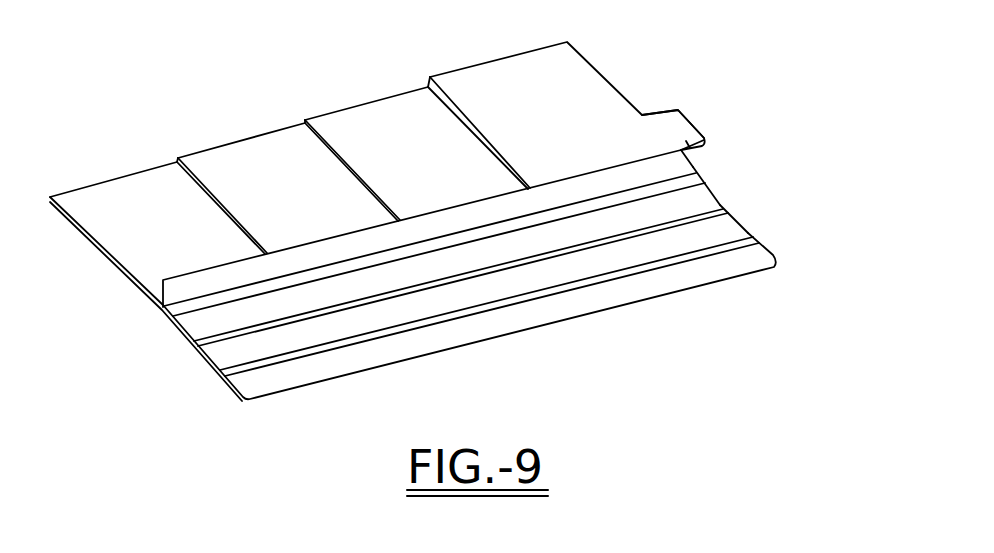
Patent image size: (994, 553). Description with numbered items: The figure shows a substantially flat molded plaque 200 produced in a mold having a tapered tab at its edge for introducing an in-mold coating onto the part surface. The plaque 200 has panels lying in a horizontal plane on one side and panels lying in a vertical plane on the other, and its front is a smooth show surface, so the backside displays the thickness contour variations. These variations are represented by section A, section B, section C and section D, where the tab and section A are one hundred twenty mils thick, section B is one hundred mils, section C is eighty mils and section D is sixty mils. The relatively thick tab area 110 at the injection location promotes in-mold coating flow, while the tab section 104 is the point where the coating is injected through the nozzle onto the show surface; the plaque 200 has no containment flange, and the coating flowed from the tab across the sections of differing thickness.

The section A is at (513, 72).
The section B is at (377, 115).
The section C is at (258, 152).
The section D is at (125, 190).
The tab area 110 is at (695, 112).
The tab section 104 is at (707, 156).
The plaque 200 is at (442, 209).